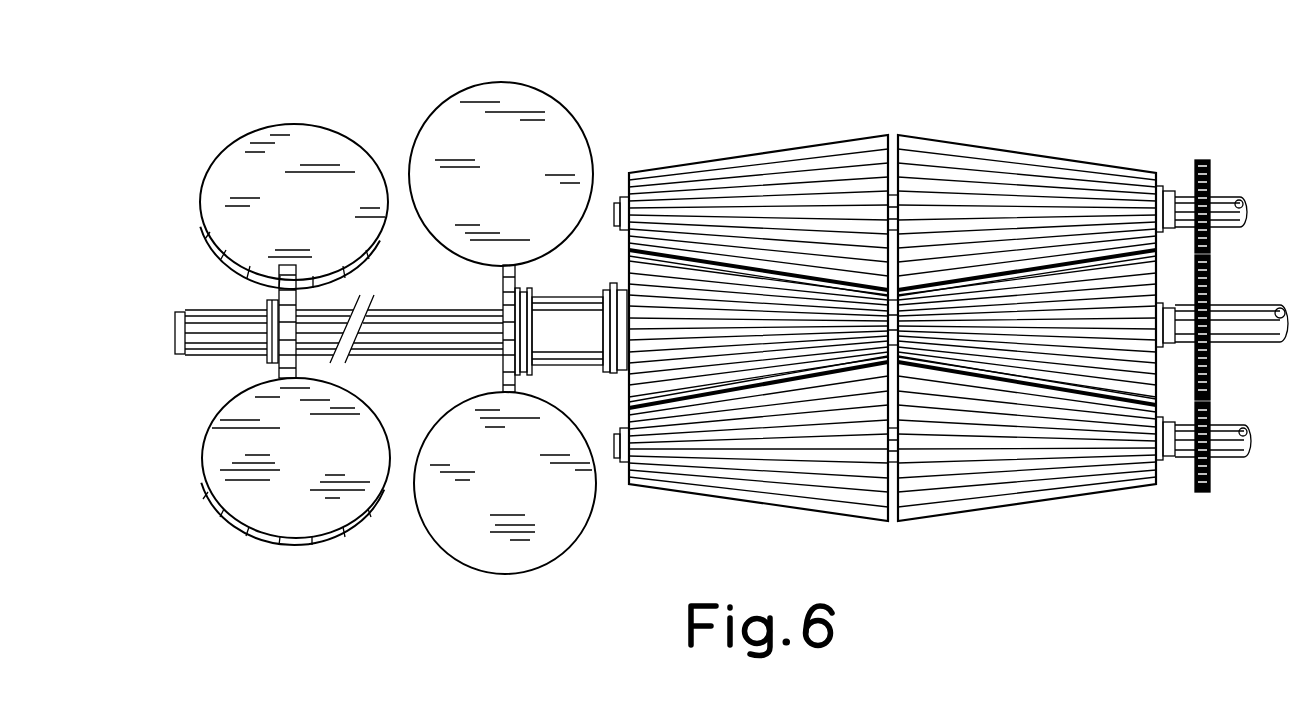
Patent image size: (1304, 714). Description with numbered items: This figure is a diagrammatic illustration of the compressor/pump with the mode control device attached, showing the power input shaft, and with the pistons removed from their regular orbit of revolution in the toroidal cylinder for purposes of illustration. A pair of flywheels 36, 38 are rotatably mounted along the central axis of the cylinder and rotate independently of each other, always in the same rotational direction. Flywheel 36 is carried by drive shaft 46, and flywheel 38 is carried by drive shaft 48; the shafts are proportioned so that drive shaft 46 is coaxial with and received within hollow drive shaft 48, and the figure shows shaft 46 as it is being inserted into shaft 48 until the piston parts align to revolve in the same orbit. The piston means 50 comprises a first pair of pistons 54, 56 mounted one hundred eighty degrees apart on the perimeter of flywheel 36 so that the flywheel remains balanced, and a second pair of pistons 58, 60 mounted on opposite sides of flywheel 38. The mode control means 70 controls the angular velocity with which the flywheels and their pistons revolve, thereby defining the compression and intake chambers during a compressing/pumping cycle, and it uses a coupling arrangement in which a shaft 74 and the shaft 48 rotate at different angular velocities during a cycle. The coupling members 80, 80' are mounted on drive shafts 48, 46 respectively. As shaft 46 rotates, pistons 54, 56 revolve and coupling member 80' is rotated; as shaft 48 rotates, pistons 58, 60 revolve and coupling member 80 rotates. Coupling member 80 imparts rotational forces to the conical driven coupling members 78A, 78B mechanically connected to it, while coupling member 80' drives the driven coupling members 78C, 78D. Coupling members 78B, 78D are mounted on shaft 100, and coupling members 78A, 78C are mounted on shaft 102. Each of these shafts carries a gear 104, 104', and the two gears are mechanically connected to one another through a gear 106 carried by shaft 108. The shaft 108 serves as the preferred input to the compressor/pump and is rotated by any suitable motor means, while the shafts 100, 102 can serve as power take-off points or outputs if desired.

The flywheel 36 is at (285, 291).
The flywheel 38 is at (505, 285).
The drive shaft 46 is at (250, 353).
The drive shaft 48 is at (555, 358).
The piston means 50 is at (386, 89).
The piston 54 is at (300, 219).
The piston 56 is at (311, 462).
The piston 58 is at (514, 169).
The piston 60 is at (521, 490).
The mode control means 70 is at (897, 124).
The shaft 74 is at (899, 446).
The driven coupling member 78A is at (828, 449).
The driven coupling member 78B is at (792, 222).
The driven coupling member 78C is at (1021, 449).
The driven coupling member 78D is at (1026, 220).
The coupling member 80 is at (758, 329).
The coupling member 80' is at (1027, 329).
The shaft 100 is at (1185, 198).
The shaft 102 is at (1190, 458).
The gear 104 is at (1223, 177).
The gear 104' is at (1244, 467).
The gear 106 is at (1213, 381).
The shaft 108 is at (1227, 306).